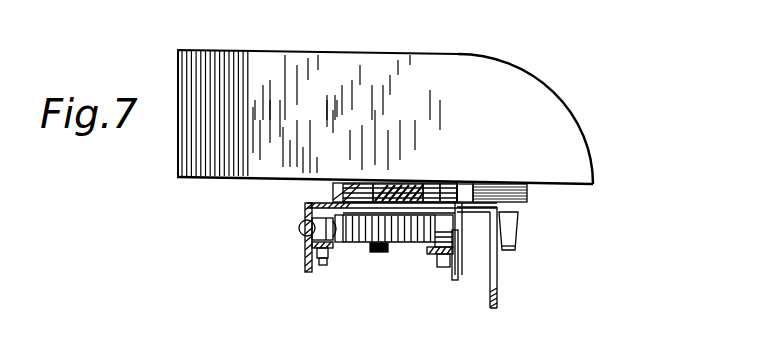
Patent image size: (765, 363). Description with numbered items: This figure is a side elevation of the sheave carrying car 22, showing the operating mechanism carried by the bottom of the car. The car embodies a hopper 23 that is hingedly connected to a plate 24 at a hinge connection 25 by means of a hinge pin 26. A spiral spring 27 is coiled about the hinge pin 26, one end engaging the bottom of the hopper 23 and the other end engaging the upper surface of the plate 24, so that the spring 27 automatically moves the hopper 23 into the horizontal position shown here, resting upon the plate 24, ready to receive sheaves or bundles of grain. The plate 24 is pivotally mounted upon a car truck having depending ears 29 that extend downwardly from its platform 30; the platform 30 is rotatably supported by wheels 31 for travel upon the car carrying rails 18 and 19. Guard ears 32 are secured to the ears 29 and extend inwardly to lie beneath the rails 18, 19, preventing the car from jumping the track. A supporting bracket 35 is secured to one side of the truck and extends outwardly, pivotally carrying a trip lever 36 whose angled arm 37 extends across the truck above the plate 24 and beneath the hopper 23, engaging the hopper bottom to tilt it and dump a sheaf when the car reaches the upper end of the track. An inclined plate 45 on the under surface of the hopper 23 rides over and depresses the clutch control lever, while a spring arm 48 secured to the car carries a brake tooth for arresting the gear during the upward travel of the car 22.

The sheave carrying car 22 is at (449, 76).
The hopper 23 is at (578, 142).
The plate 24 is at (356, 169).
The hinge connection 25 is at (433, 186).
The hinge pin 26 is at (362, 182).
The spiral spring 27 is at (387, 182).
The angled arm 37 is at (450, 186).
The plate 45 is at (510, 200).
The platform 30 is at (307, 203).
The depending ears 29 is at (310, 272).
The spring arm 48 is at (302, 225).
The wheels 31 is at (336, 244).
The car carrying rail 18 is at (338, 268).
The car carrying rail 19 is at (428, 258).
The guard ears 32 is at (325, 277).
The supporting bracket 35 is at (480, 214).
The trip lever 36 is at (502, 289).